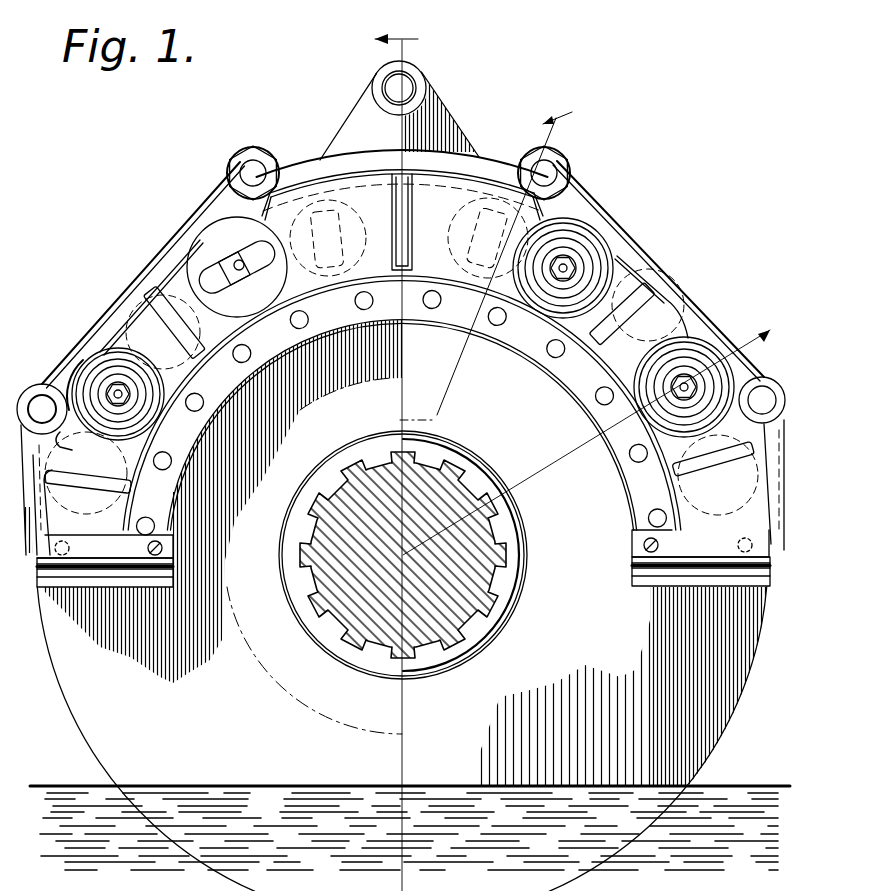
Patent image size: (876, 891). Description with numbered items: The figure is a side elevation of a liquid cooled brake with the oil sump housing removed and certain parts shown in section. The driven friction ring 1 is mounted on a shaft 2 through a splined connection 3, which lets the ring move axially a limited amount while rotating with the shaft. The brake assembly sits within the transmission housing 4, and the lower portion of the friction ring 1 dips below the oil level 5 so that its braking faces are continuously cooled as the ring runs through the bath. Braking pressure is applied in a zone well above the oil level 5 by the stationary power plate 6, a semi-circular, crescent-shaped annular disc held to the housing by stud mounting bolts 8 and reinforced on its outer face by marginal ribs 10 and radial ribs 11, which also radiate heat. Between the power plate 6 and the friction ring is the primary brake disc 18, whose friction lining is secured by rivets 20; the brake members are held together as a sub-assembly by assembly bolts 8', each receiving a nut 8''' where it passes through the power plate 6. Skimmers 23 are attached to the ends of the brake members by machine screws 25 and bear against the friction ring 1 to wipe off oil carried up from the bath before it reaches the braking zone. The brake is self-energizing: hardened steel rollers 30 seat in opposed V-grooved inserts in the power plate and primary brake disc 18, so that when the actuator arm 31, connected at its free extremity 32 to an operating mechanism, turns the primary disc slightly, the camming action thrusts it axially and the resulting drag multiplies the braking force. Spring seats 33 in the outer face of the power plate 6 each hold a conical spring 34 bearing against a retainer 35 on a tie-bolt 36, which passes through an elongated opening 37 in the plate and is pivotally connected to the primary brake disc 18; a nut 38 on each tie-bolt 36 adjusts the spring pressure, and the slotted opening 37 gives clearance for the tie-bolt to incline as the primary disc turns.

The driven friction ring 1 is at (731, 700).
The shaft 2 is at (540, 529).
The splined connection 3 is at (454, 476).
The transmission housing 4 is at (595, 435).
The oil level 5 is at (522, 785).
The stationary power plate 6 is at (222, 203).
The stud mounting bolts 8 is at (400, 391).
The assembly bolts 8' is at (381, 159).
The nut 8''' is at (426, 160).
The marginal ribs 10 is at (592, 193).
The radial ribs 11 is at (413, 208).
The primary brake disc 18 is at (314, 546).
The rivets 20 is at (307, 317).
The skimmer 23 is at (172, 568).
The machine screws 25 is at (163, 545).
The hardened steel roller 30 is at (128, 303).
The actuator arm 31 is at (453, 114).
The free extremity of actuator arm 32 is at (412, 83).
The spring seats 33 is at (190, 266).
The conical spring 34 is at (97, 354).
The retainer or washer 35 is at (128, 390).
The tie-bolt 36 is at (243, 260).
The opening in power plate 37 is at (236, 288).
The nut 38 is at (132, 404).